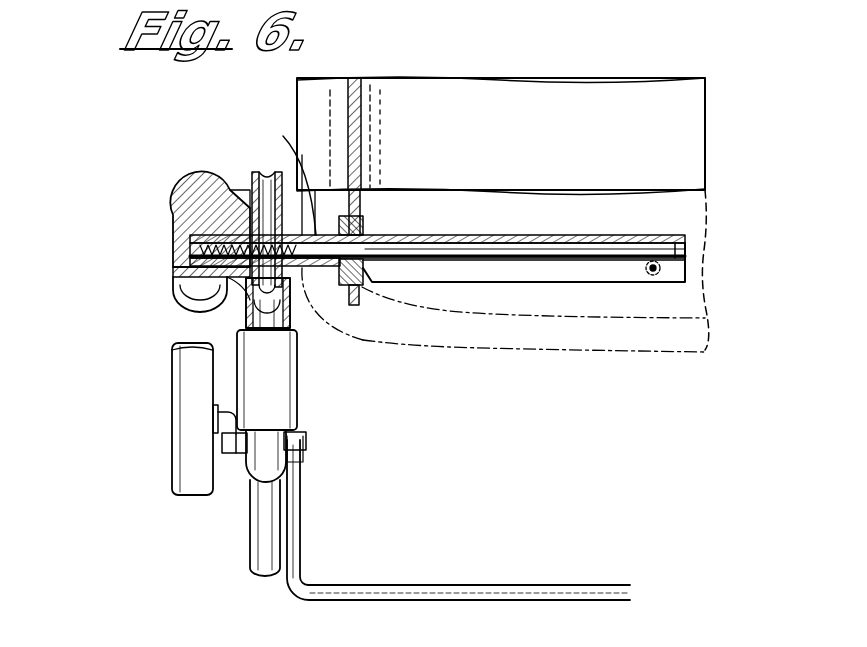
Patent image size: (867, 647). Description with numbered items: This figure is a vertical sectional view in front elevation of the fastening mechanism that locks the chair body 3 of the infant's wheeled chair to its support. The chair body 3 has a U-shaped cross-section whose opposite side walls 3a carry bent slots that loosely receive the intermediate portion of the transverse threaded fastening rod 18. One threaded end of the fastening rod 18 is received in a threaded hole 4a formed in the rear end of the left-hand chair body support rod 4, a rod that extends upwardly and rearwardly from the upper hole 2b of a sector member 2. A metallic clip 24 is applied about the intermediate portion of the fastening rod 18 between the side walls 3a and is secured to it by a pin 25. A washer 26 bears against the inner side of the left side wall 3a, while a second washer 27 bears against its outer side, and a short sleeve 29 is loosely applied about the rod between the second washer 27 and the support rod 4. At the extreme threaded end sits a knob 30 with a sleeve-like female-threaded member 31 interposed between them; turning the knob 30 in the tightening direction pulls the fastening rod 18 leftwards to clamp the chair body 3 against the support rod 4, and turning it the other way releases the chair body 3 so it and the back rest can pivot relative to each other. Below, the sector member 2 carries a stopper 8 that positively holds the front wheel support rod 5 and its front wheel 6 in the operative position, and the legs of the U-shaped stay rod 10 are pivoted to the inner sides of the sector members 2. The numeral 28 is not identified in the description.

The sector member 2 is at (282, 420).
The upper hole 2b is at (252, 322).
The chair body 3 is at (655, 86).
The side wall 3a is at (358, 305).
The chair body support rod 4 is at (252, 180).
The threaded hole 4a is at (185, 232).
The front wheel support rod 5 is at (222, 422).
The front wheel 6 is at (187, 483).
The stopper 8 is at (235, 448).
The stay rod 10 is at (486, 585).
The transverse fastening rod 18 is at (546, 252).
The metallic clip 24 is at (665, 236).
The pin 25 is at (660, 269).
The washer 26 is at (364, 225).
The second washer 27 is at (351, 300).
The arm 28 is at (338, 275).
The short sleeve 29 is at (279, 177).
The knob 30 is at (173, 210).
The sleeve-like female-threaded member 31 is at (206, 269).